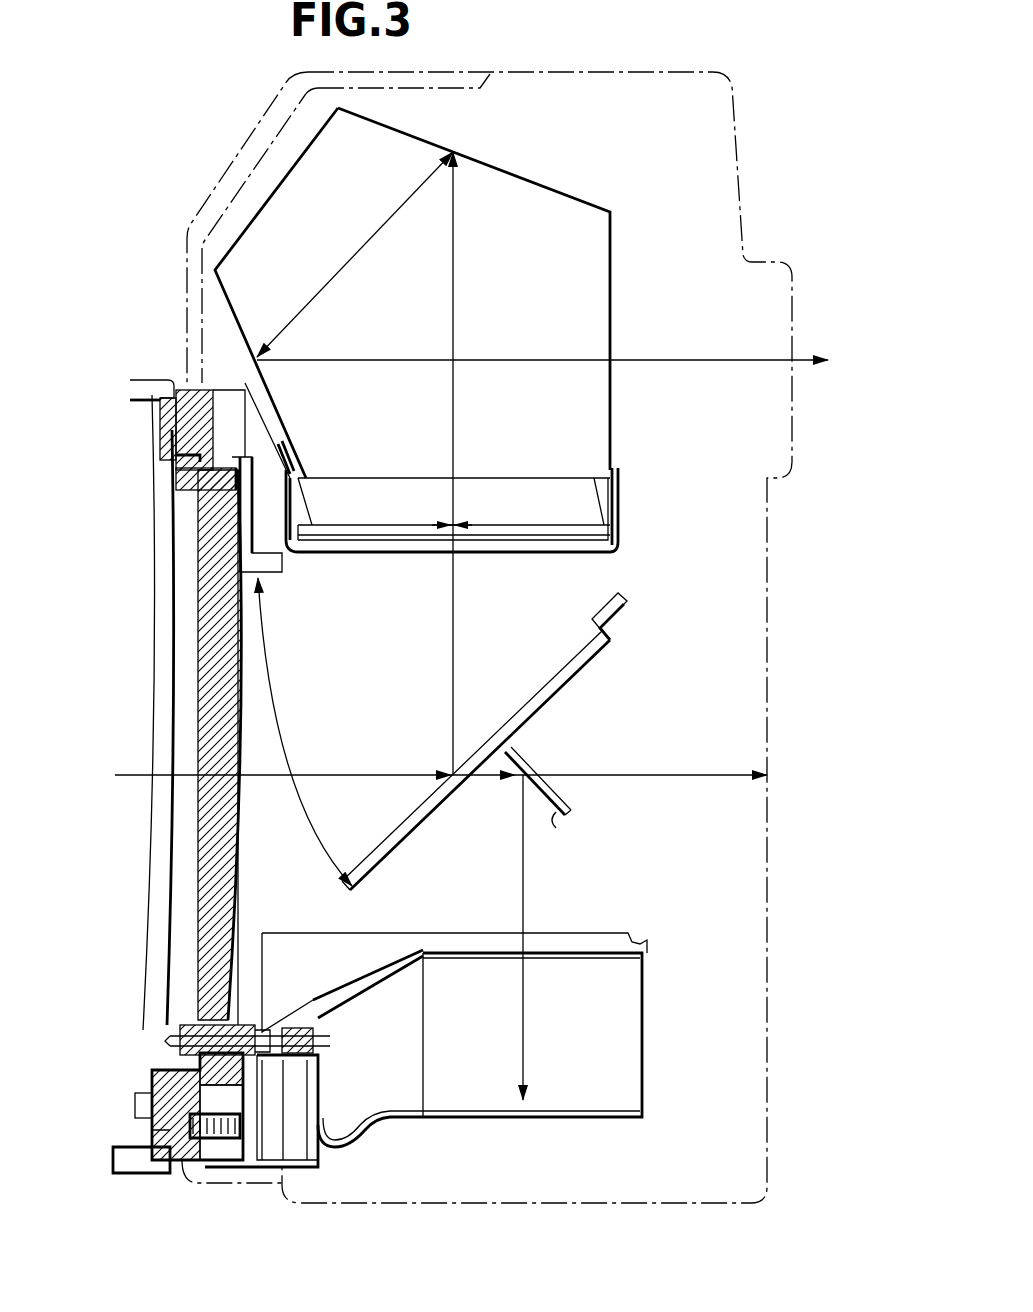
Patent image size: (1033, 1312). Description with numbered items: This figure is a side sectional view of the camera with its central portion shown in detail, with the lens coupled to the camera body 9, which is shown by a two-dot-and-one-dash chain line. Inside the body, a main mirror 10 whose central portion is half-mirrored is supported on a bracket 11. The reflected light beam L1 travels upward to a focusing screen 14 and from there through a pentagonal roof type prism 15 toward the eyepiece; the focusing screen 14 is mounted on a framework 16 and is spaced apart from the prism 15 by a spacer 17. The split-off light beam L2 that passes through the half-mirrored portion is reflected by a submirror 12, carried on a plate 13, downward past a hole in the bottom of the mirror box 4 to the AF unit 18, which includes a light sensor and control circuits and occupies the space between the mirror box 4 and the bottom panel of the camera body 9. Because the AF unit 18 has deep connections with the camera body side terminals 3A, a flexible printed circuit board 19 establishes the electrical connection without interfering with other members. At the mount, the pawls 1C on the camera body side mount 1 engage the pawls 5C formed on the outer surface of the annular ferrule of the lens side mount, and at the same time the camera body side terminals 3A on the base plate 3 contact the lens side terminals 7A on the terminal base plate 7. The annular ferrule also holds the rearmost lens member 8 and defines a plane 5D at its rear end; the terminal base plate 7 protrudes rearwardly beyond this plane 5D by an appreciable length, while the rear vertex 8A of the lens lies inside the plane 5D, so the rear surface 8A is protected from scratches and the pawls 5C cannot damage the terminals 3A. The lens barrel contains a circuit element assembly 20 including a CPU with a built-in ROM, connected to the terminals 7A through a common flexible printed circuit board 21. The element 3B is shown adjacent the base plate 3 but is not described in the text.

The camera body side mount 1 is at (178, 1165).
The pawls 1C is at (170, 462).
The base plate 3 is at (273, 1133).
The terminals 3A is at (260, 1143).
The holder portion 3B is at (313, 1150).
The mirror box 4 is at (222, 385).
The pawls 5C is at (200, 482).
The plane 5D is at (236, 575).
The terminal base plate 7 is at (210, 1010).
The terminals 7A is at (190, 1043).
The rearmost lens member 8 is at (205, 877).
The rear vertex of the lens 8A is at (236, 612).
The camera body 9 is at (768, 1100).
The main mirror 10 is at (612, 650).
The bracket 11 is at (588, 672).
The submirror 12 is at (556, 828).
The plate 13 is at (538, 770).
The focusing screen 14 is at (598, 540).
The pentagonal roof type prism 15 is at (592, 440).
The framework 16 is at (618, 520).
The spacer 17 is at (603, 492).
The AF unit 18 is at (630, 1090).
The flexible printed circuit board 19 is at (390, 1120).
The circuit element assembly 20 is at (138, 1105).
The flexible printed circuit board 21 is at (146, 1126).
The reflected light beam L1 is at (412, 655).
The split-off light beam L2 is at (495, 785).